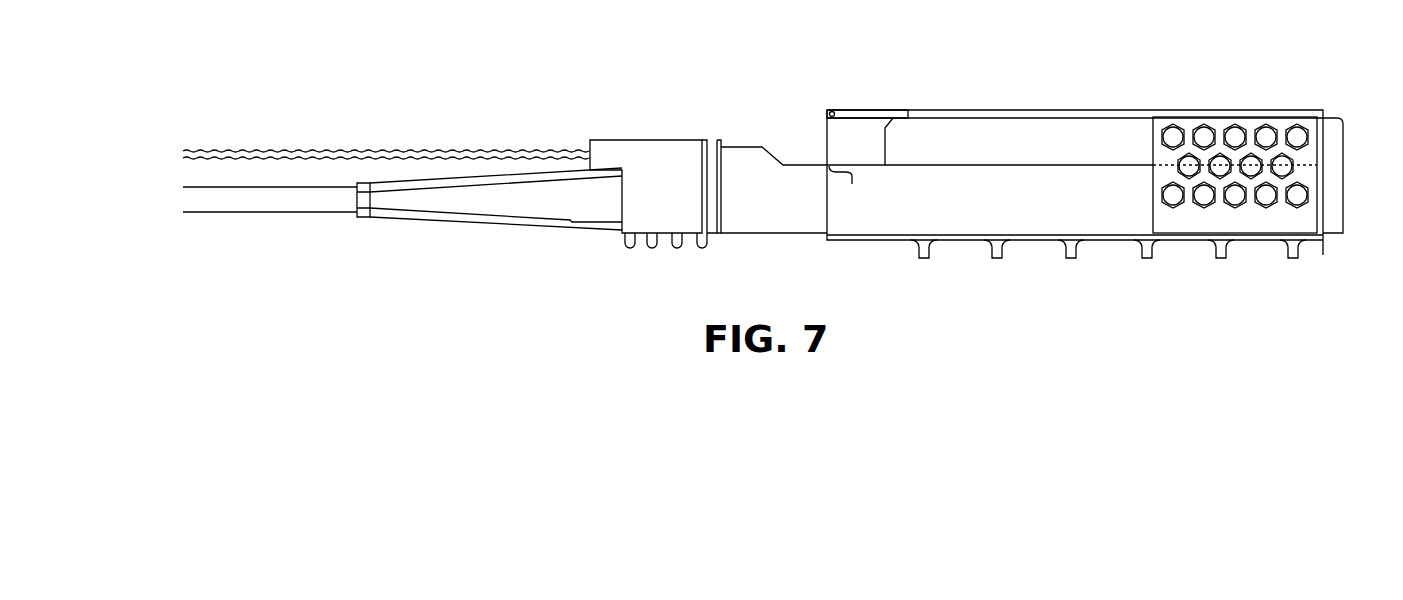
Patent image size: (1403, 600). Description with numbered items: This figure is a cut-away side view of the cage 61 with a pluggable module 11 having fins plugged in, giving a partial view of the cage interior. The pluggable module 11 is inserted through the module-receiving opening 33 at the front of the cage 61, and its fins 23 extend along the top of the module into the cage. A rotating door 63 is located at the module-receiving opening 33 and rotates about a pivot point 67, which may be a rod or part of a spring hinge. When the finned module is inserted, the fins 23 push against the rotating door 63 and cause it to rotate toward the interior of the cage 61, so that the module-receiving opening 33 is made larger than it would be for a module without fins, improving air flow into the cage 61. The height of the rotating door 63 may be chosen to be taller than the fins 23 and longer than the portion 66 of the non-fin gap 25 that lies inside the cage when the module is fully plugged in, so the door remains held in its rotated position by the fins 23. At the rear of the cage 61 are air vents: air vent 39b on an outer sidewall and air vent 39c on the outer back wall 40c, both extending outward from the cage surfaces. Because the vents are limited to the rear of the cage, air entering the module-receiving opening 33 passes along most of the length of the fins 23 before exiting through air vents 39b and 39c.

The pluggable module 11 is at (680, 112).
The fins 23 is at (1028, 124).
The non-fin gap 25 is at (810, 166).
The module-receiving opening 33 is at (812, 138).
The air vent 39b is at (1190, 118).
The air vent 39c is at (1343, 118).
The outer back wall 40c is at (1333, 117).
The cage 61 is at (1100, 70).
The rotating door 63 is at (858, 116).
The portion of non-fin gap 66 is at (852, 176).
The pivot point 67 is at (832, 110).